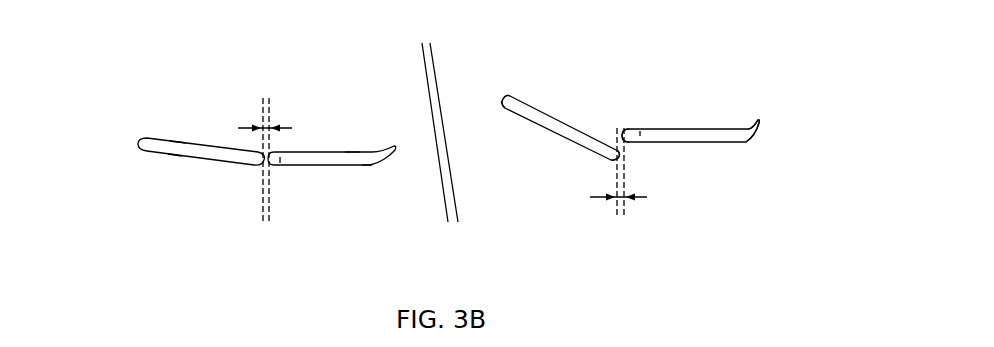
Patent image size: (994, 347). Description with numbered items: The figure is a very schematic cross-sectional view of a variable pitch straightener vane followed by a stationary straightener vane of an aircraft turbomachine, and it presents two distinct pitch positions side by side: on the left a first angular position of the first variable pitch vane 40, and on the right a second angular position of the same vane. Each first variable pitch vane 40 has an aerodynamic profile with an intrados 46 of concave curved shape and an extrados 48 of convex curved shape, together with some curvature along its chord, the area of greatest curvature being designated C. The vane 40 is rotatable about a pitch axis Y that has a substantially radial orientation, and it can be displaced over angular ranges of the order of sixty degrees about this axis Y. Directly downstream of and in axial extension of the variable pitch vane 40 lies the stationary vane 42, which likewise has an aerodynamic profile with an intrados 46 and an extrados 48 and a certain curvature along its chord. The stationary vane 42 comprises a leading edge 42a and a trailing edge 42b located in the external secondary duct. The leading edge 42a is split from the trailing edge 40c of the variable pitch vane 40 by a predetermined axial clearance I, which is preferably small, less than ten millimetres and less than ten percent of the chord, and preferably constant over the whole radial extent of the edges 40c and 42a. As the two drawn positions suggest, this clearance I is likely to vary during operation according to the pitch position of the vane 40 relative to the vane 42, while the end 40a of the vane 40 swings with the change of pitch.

The first variable pitch vane 40 is at (202, 173).
The first end of first blade element 40a is at (505, 96).
The trailing edge of first variable pitch vane 40c is at (620, 156).
The stationary vane 42 is at (345, 182).
The leading edge of stationary vane 42a is at (630, 129).
The trailing edge of stationary vane 42b is at (757, 120).
The intrados 46 is at (178, 134).
The extrados 48 is at (174, 170).
The area of greatest curvature C is at (165, 134).
The pitch axis Y is at (207, 150).
The axial clearance I is at (292, 128).